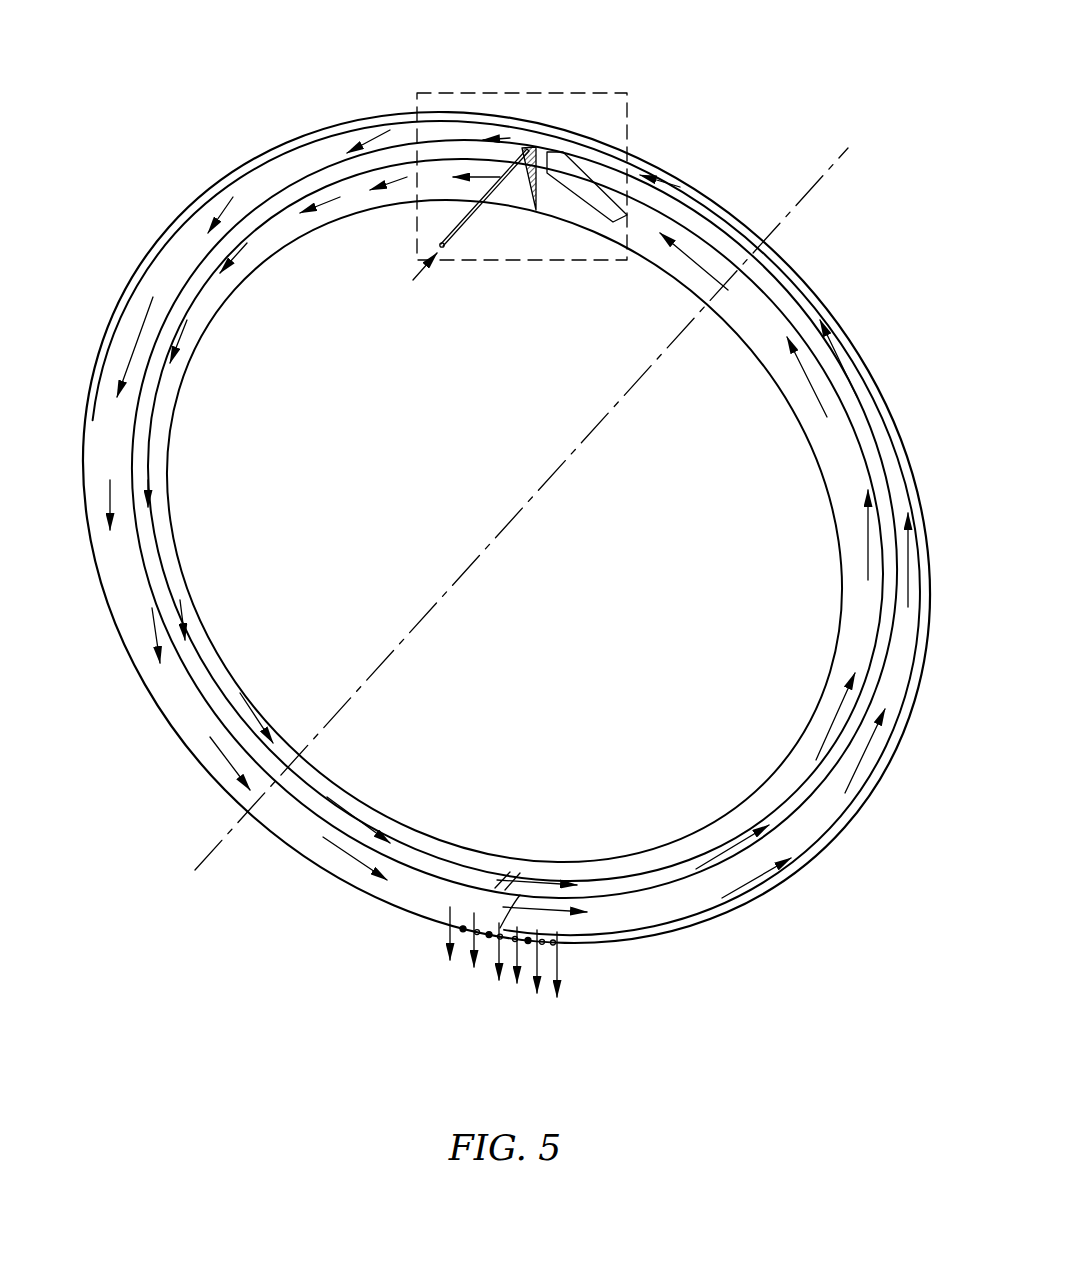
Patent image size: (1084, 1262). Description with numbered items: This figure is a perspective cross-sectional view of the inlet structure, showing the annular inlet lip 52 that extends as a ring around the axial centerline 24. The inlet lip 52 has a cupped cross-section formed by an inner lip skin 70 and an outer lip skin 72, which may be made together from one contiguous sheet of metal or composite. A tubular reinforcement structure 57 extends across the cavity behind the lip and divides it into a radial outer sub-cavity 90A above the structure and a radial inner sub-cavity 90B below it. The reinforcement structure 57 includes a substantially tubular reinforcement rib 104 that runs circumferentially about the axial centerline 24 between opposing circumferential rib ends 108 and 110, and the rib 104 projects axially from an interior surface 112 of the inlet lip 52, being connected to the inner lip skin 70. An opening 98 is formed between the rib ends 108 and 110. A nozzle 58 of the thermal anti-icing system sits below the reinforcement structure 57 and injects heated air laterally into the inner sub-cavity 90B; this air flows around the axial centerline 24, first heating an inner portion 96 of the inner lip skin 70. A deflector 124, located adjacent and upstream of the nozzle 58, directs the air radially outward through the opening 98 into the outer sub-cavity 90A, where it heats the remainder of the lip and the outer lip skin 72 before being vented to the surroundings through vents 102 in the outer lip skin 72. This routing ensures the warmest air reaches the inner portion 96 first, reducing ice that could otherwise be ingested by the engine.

The inlet lip 52 is at (723, 162).
The axial centerline 24 is at (840, 150).
The outer lip skin 72 is at (383, 116).
The reinforcement structure 57 is at (320, 157).
The reinforcement rib 104 is at (295, 181).
The interior surface 112 is at (348, 185).
The inner lip skin 70 is at (385, 212).
The inner portion 96 is at (653, 266).
The radial outer sub-cavity 90A is at (122, 398).
The radial inner sub-cavity 90B is at (203, 315).
The circumferential rib end 110 is at (522, 147).
The opening 98 is at (548, 152).
The circumferential rib end 108 is at (580, 142).
The nozzle 58 is at (473, 235).
The deflector 124 is at (522, 193).
The vents 102 is at (463, 930).